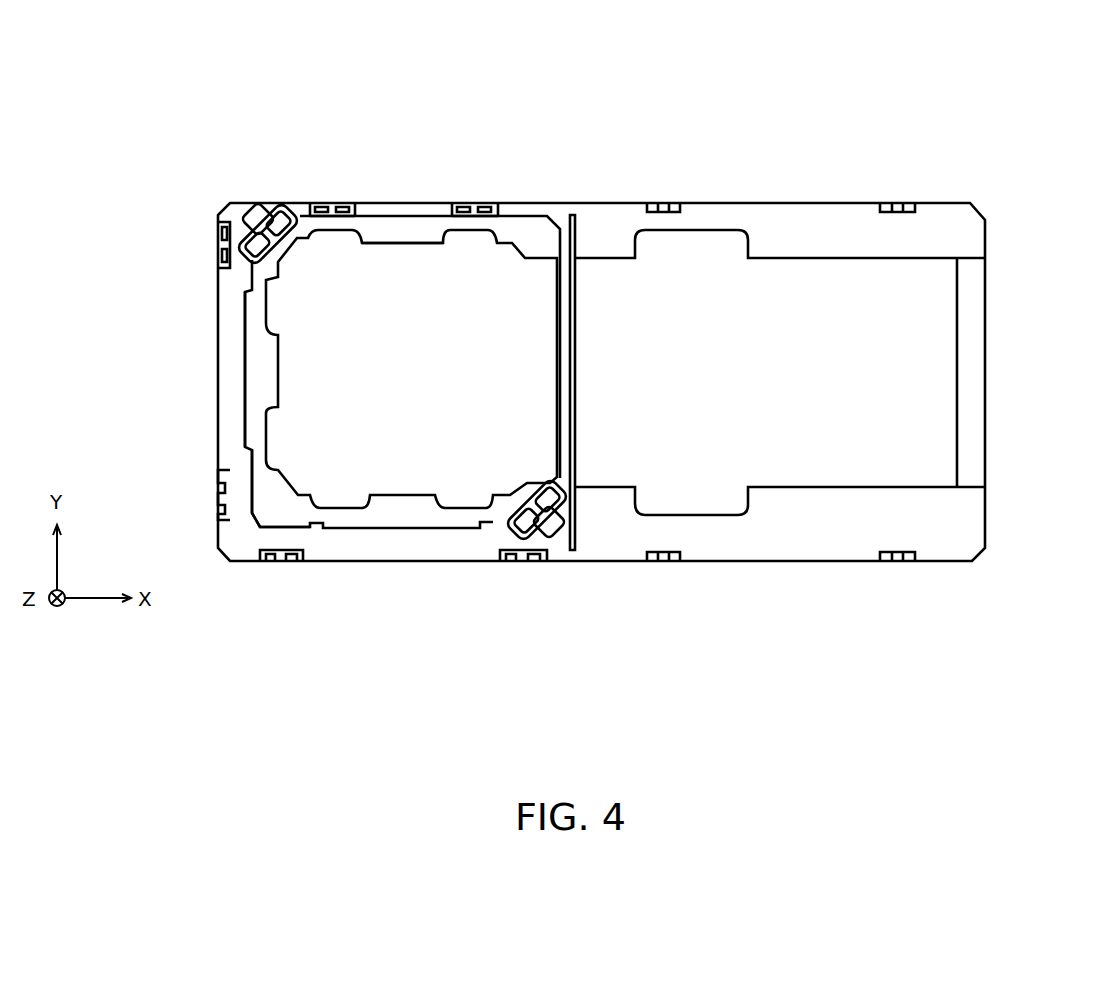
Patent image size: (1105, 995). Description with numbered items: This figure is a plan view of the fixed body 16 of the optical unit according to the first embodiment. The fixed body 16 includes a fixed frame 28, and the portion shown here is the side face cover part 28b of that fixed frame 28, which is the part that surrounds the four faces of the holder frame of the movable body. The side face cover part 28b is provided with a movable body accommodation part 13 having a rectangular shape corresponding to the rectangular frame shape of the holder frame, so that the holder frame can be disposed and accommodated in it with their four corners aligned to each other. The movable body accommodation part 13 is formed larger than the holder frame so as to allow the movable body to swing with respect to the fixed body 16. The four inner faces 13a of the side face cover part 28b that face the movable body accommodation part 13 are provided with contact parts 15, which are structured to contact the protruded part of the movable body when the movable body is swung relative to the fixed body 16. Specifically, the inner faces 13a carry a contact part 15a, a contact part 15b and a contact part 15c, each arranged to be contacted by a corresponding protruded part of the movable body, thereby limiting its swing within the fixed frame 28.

The movable body accommodation part 13 is at (391, 303).
The inner faces 13a is at (248, 338).
The contact parts 15 is at (401, 366).
The contact part 15a is at (248, 490).
The contact part 15b is at (254, 279).
The contact part 15c is at (440, 240).
The fixed body 16 is at (928, 147).
The fixed frame 28 is at (838, 372).
The side face cover part 28b is at (987, 236).